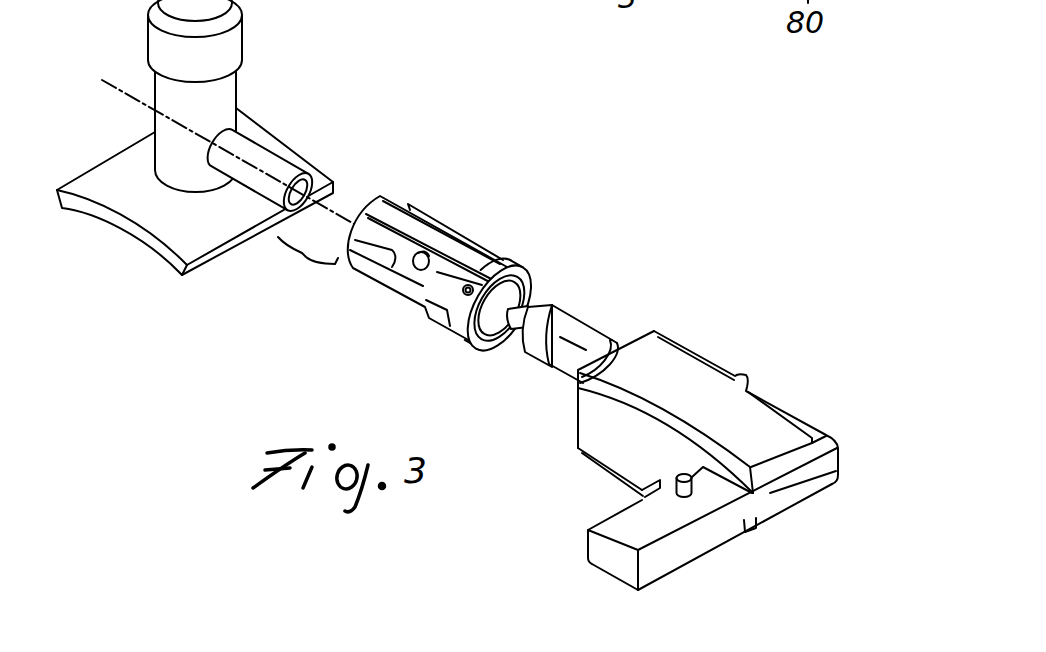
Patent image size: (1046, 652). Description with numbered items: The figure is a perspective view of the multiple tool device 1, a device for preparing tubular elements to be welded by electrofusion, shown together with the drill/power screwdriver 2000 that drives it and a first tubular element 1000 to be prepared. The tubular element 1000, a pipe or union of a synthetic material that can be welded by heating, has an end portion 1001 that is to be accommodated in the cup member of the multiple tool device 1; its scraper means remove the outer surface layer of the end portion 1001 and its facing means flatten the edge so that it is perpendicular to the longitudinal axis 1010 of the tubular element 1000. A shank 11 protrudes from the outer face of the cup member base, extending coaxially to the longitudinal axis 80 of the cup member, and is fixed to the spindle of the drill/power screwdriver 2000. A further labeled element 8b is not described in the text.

The multiple tool device 1 is at (459, 273).
The shank 11 is at (512, 332).
The longitudinal axis 80 is at (365, 287).
The housing part 8b is at (565, 0).
The tubular element 1000 is at (257, 157).
The end portion 1001 is at (318, 168).
The longitudinal axis 1010 is at (102, 80).
The drill/power screwdriver 2000 is at (693, 386).